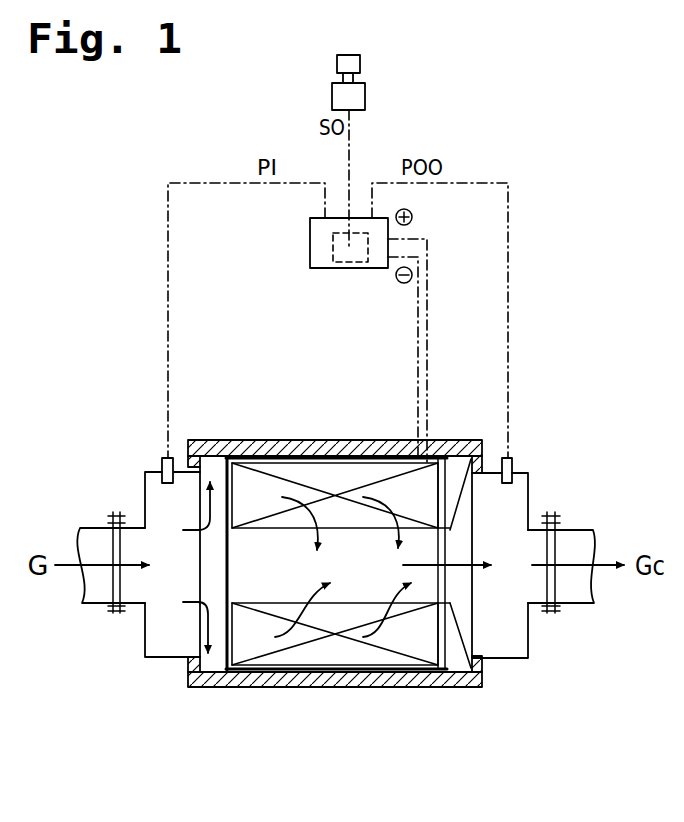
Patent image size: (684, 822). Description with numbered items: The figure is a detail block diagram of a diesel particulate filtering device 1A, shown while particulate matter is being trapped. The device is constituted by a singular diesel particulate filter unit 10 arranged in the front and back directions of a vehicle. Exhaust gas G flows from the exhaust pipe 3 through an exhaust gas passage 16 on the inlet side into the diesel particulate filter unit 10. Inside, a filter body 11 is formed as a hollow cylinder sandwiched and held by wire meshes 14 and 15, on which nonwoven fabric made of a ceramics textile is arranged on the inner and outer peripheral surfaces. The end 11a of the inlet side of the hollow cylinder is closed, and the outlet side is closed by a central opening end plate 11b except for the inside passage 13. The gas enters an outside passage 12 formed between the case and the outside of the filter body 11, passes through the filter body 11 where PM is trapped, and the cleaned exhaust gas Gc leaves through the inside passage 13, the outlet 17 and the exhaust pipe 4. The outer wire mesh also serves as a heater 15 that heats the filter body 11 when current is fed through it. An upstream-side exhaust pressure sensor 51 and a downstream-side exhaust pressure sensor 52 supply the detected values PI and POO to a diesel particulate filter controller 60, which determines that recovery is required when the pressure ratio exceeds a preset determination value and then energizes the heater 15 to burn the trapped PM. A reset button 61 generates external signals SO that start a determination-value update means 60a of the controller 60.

The diesel particulate filtering device 1A is at (405, 698).
The exhaust pipe 3 is at (98, 527).
The exhaust pipe 4 is at (582, 530).
The diesel particulate filter unit 10 is at (335, 688).
The filter body 11 is at (250, 638).
The end of the inlet side 11a is at (203, 600).
The central opening end plate 11b is at (478, 668).
The outside passage 12 is at (296, 670).
The inside passage 13 is at (365, 575).
The wire mesh 14 is at (341, 528).
The heater 15 is at (256, 456).
The exhaust gas passage 16 is at (150, 587).
The outlet 17 is at (498, 600).
The upstream-side exhaust pressure sensor 51 is at (158, 460).
The downstream-side exhaust pressure sensor 52 is at (513, 462).
The diesel particulate filter controller 60 is at (310, 236).
The determination-value update means 60a is at (340, 260).
The reset button 61 is at (367, 98).